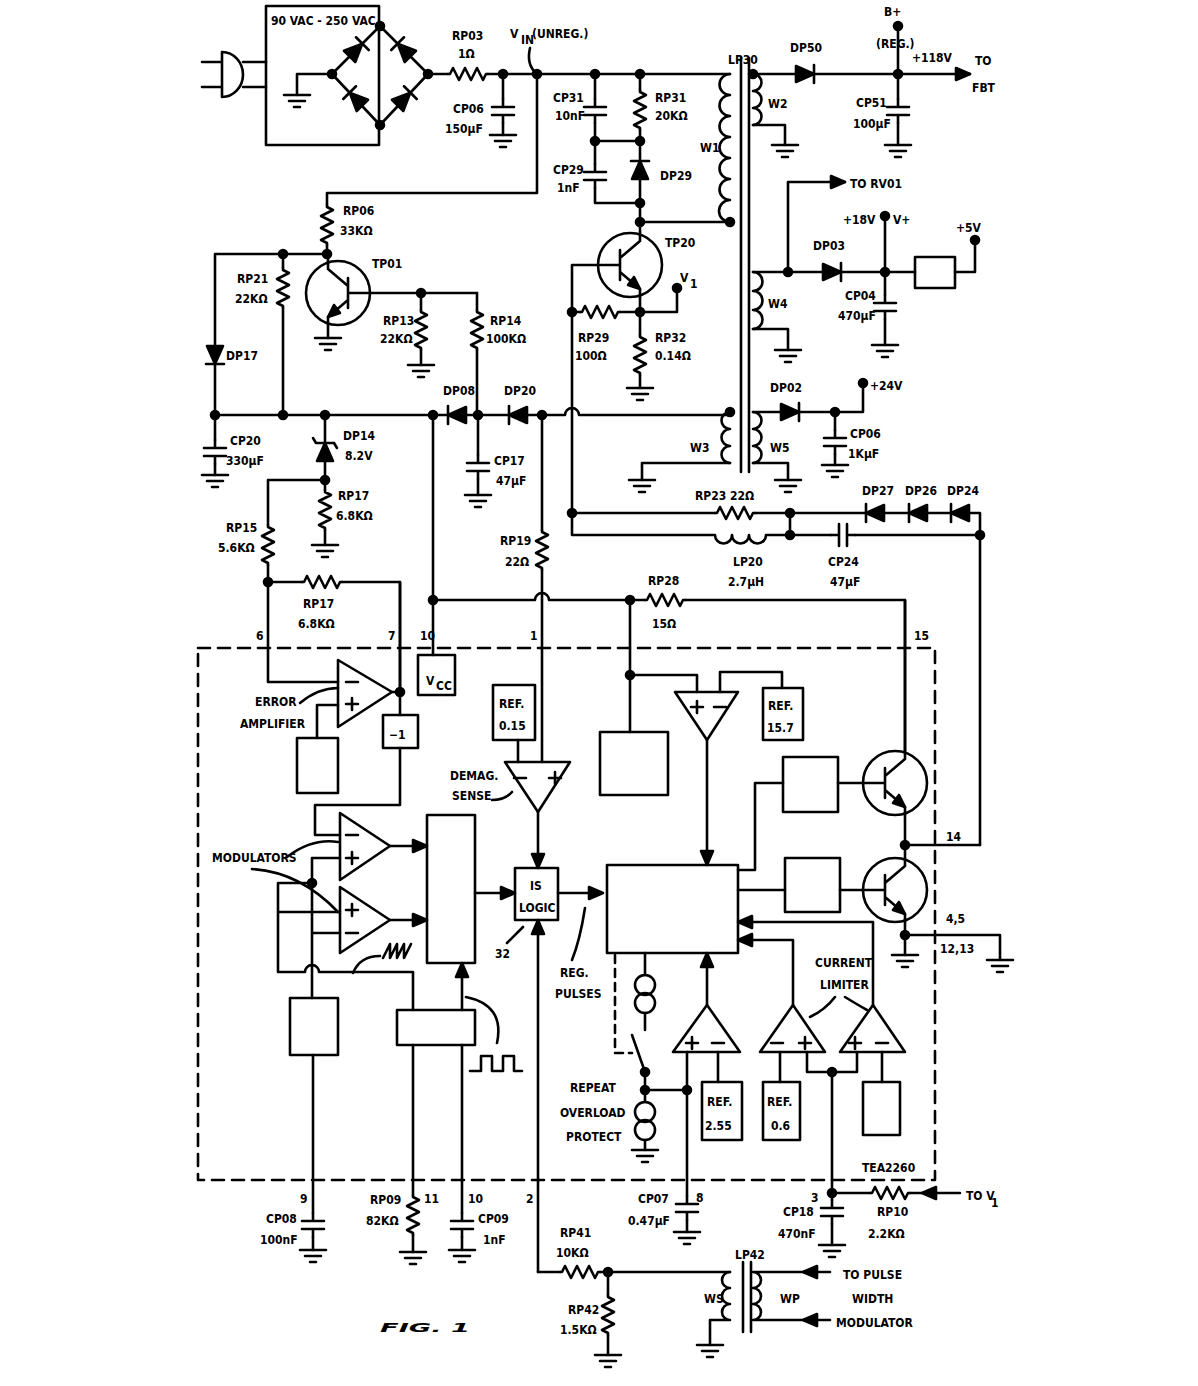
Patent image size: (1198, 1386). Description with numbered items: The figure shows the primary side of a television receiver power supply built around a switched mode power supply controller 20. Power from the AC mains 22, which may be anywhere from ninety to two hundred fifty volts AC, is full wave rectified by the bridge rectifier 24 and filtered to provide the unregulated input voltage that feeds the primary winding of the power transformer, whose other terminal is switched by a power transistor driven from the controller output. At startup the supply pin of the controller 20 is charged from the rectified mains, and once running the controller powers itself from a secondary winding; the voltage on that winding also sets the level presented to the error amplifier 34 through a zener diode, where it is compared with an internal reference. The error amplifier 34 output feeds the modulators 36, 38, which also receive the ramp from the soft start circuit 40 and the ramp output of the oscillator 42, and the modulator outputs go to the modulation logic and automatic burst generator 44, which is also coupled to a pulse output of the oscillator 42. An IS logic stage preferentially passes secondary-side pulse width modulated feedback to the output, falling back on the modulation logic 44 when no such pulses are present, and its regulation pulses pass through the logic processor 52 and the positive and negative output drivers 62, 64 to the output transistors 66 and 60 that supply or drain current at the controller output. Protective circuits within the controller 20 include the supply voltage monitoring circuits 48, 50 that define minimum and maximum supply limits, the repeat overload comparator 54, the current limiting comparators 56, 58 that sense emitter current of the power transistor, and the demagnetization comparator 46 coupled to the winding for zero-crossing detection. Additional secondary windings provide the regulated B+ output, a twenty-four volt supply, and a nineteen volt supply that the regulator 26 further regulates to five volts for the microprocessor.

The switched mode power supply controller 20 is at (900, 1118).
The AC mains 22 is at (258, 97).
The bridge rectifier 24 is at (392, 118).
The regulator 26 is at (945, 290).
The error amplifier 34 is at (353, 720).
The modulator 36 is at (370, 829).
The modulator 38 is at (370, 898).
The soft start circuit 40 is at (272, 1024).
The oscillator 42 is at (400, 1047).
The modulation logic and automatic burst generator 44 is at (477, 850).
The demagnetization comparator 46 is at (553, 797).
The VCC monitoring circuit 48 is at (648, 796).
The VCC monitoring circuit 50 is at (722, 733).
The logic processor 52 is at (668, 863).
The repeat overload comparator 54 is at (711, 1012).
The current limiting comparator 56 is at (778, 1027).
The current limiting comparator 58 is at (881, 1016).
The output transistor 60 is at (887, 857).
The positive output driver 62 is at (892, 751).
The negative output driver 64 is at (827, 850).
The output transistor 66 is at (812, 756).